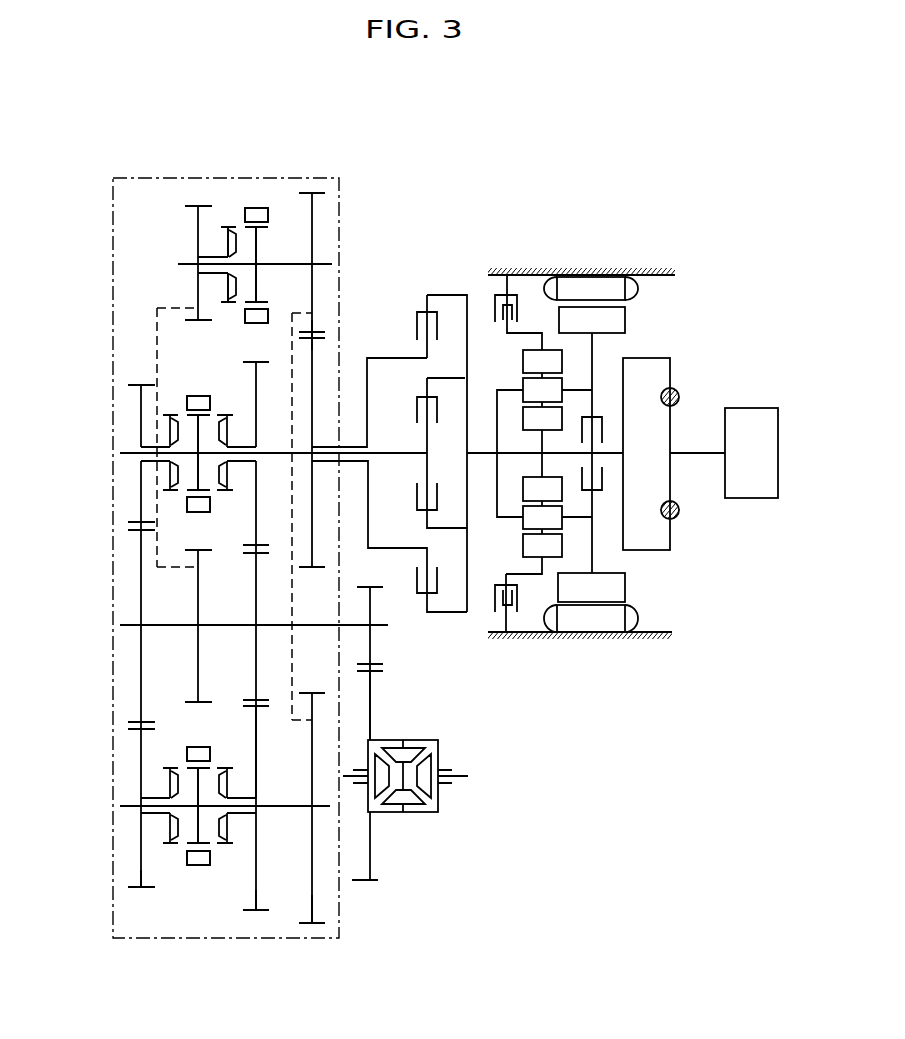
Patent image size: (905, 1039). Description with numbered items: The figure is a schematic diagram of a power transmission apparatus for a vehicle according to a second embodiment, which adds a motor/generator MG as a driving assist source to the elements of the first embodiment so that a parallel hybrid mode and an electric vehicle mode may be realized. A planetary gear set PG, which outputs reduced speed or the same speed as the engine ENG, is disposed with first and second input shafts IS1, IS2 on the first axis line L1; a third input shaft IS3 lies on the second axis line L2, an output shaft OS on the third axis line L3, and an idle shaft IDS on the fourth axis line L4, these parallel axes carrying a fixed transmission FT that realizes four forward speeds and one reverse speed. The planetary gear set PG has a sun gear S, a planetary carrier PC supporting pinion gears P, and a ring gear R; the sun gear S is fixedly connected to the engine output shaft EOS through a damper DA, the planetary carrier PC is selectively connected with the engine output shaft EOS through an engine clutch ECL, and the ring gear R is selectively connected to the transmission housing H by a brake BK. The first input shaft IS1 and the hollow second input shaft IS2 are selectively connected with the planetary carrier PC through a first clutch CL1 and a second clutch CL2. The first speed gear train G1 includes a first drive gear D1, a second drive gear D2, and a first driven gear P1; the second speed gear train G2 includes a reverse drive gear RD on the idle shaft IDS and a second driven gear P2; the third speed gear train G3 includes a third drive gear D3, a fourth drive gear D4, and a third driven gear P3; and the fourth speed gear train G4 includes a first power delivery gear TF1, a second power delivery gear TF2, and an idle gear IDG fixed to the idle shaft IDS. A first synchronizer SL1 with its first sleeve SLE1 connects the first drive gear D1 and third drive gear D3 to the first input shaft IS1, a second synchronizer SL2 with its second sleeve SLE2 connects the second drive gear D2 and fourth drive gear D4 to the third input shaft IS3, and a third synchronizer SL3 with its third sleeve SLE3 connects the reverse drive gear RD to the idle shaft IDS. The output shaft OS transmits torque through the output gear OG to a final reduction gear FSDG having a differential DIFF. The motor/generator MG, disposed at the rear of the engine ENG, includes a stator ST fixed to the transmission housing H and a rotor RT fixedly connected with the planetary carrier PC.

The fixed transmission FT is at (331, 176).
The first axis line L1 is at (120, 453).
The second axis line L2 is at (120, 806).
The third axis line L3 is at (120, 625).
The fourth axis line L4 is at (178, 264).
The idle shaft IDS is at (183, 266).
The idle gear IDG is at (313, 218).
The first drive gear D1 is at (140, 408).
The second drive gear D2 is at (140, 878).
The third drive gear D3 is at (257, 418).
The fourth drive gear D4 is at (257, 747).
The first driven gear P1 is at (142, 652).
The second driven gear P2 is at (199, 652).
The third driven gear P3 is at (257, 643).
The first speed gear train G1 is at (145, 900).
The second speed gear train G2 is at (196, 200).
The third speed gear train G3 is at (247, 918).
The fourth speed gear train G4 is at (307, 928).
The reverse drive gear RD is at (198, 232).
The first synchronizer SL1 is at (197, 392).
The second synchronizer SL2 is at (191, 870).
The third synchronizer SL3 is at (246, 200).
The first sleeve SLE1 is at (206, 392).
The second sleeve SLE2 is at (207, 868).
The third sleeve SLE3 is at (258, 207).
The first power delivery gear TF1 is at (313, 360).
The second power delivery gear TF2 is at (312, 895).
The output shaft OS is at (318, 626).
The output gear OG is at (370, 647).
The final reduction gear FSDG is at (370, 705).
The differential DIFF is at (440, 750).
The first input shaft IS1 is at (387, 447).
The second input shaft IS2 is at (353, 462).
The third input shaft IS3 is at (283, 807).
The first clutch CL1 is at (440, 386).
The second clutch CL2 is at (412, 308).
The brake BK is at (488, 294).
The transmission housing H is at (538, 273).
The planetary carrier PC is at (504, 390).
The ring gear R is at (542, 360).
The pinion gears P is at (542, 389).
The sun gear S is at (542, 417).
The planetary gear set PG is at (568, 551).
The motor/generator MG is at (608, 303).
The stator ST is at (591, 288).
The rotor RT is at (592, 319).
The engine clutch ECL is at (606, 400).
The damper DA is at (678, 391).
The engine output shaft EOS is at (700, 457).
The engine ENG is at (751, 453).